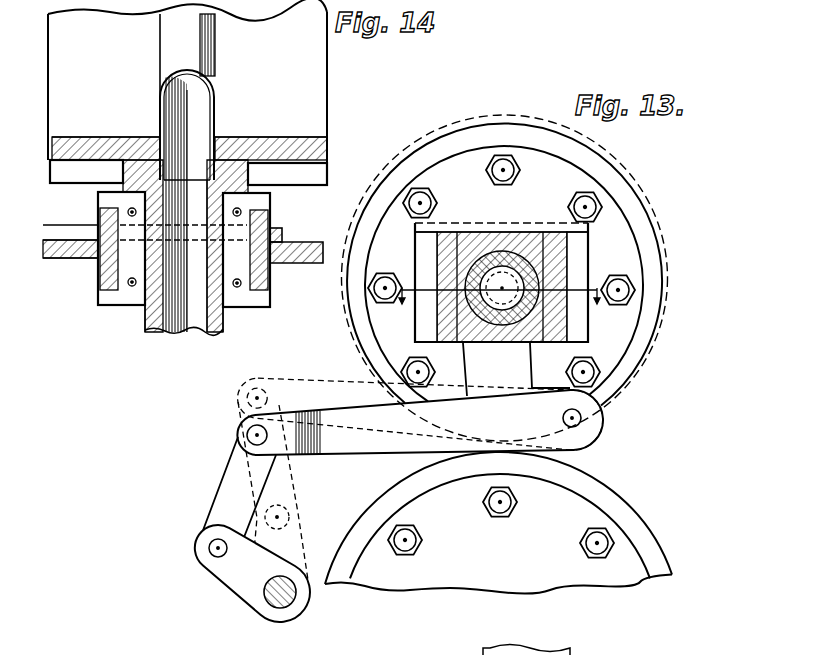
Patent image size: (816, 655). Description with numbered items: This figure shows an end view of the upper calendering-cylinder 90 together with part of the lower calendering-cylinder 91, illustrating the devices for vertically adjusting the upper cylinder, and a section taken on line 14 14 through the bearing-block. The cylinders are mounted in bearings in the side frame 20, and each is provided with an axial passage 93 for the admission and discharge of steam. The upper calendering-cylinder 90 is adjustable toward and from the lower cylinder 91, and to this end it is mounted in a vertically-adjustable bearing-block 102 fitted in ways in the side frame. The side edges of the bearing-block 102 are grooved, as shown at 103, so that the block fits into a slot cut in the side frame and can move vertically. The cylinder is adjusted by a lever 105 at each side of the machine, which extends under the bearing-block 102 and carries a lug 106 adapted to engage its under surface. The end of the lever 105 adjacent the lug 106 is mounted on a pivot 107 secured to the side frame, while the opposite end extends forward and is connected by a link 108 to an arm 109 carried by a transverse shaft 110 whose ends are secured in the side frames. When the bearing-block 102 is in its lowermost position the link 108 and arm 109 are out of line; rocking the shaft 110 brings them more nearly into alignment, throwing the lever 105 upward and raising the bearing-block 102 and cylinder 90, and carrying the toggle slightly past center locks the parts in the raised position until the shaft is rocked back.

In FIG. 13, the section line 14 14 is at (481, 303).
In FIG. 14, the side frame 20 is at (303, 243).
In FIG. 14, the upper calendering-cylinder 90 is at (313, 118).
In FIG. 13, the upper calendering-cylinder 90 is at (618, 382).
In FIG. 13, the lower calendering-cylinder 91 is at (647, 537).
In FIG. 14, the axial passage 93 is at (187, 313).
In FIG. 13, the bearing-block 102 is at (470, 240).
In FIG. 14, the groove 103 is at (101, 212).
In FIG. 13, the groove 103 is at (427, 253).
In FIG. 14, the lever 105 is at (77, 230).
In FIG. 13, the lever 105 is at (420, 404).
In FIG. 13, the lug 106 is at (516, 369).
In FIG. 13, the pivot 107 is at (564, 415).
In FIG. 13, the link 108 is at (217, 505).
In FIG. 13, the arm 109 is at (232, 573).
In FIG. 13, the transverse shaft 110 is at (272, 604).